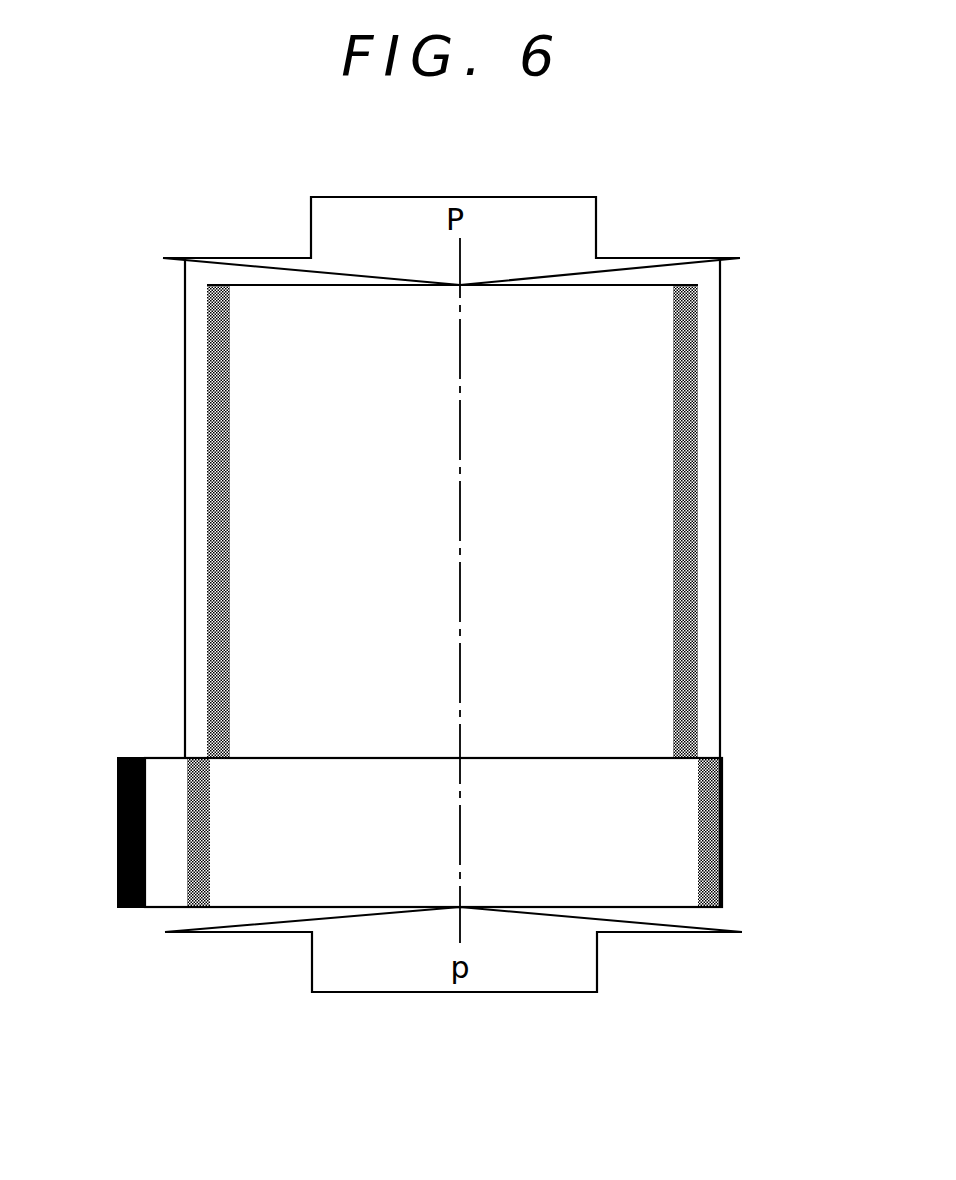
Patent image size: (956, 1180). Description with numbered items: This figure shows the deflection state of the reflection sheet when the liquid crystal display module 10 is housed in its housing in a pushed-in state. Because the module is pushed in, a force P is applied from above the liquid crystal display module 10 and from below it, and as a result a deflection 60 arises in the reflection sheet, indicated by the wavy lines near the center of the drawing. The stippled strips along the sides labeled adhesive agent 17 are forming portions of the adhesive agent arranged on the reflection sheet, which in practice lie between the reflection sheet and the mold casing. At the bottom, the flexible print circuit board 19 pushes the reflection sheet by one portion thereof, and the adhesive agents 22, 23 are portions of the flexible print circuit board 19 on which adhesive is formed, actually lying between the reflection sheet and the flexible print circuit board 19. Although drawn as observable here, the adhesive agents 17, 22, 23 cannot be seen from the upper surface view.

The liquid crystal display module 10 is at (185, 423).
The adhesive agent 17 is at (215, 578).
The deflection 60 is at (310, 390).
The flexible print circuit board 19 is at (645, 882).
The adhesive agent 22 is at (185, 875).
The adhesive agent 23 is at (722, 813).